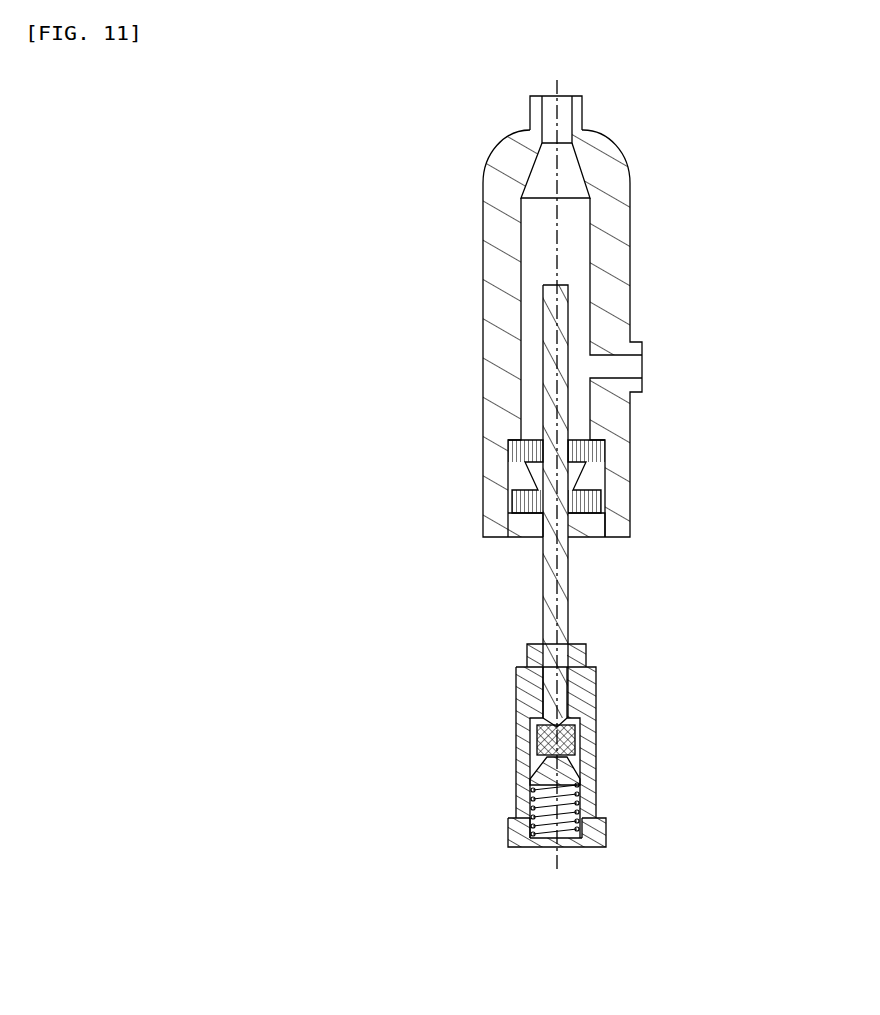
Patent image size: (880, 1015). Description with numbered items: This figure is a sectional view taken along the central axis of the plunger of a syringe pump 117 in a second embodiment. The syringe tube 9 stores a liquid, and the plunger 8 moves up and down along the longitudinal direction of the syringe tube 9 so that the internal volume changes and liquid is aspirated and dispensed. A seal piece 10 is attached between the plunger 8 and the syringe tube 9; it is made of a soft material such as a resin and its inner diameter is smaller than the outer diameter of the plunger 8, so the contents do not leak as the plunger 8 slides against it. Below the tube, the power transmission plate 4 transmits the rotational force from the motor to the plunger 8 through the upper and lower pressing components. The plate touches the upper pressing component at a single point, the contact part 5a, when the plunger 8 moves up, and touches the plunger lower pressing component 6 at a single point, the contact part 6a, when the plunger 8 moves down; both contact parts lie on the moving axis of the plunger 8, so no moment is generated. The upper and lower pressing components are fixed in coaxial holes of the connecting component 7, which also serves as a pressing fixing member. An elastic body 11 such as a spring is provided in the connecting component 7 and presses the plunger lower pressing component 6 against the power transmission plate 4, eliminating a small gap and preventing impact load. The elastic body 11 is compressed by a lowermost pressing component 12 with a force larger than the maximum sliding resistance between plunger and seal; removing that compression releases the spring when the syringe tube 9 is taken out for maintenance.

The syringe pump 117 is at (310, 108).
The syringe tube 9 is at (490, 212).
The plunger 8 is at (553, 404).
The seal piece 10 is at (603, 460).
The connecting component 7 is at (594, 702).
The contact part 5a is at (558, 725).
The power transmission plate 4 is at (578, 757).
The contact part 6a is at (550, 758).
The elastic body 11 is at (537, 840).
The plunger lower pressing component 6 is at (602, 823).
The lowermost pressing component 12 is at (578, 842).